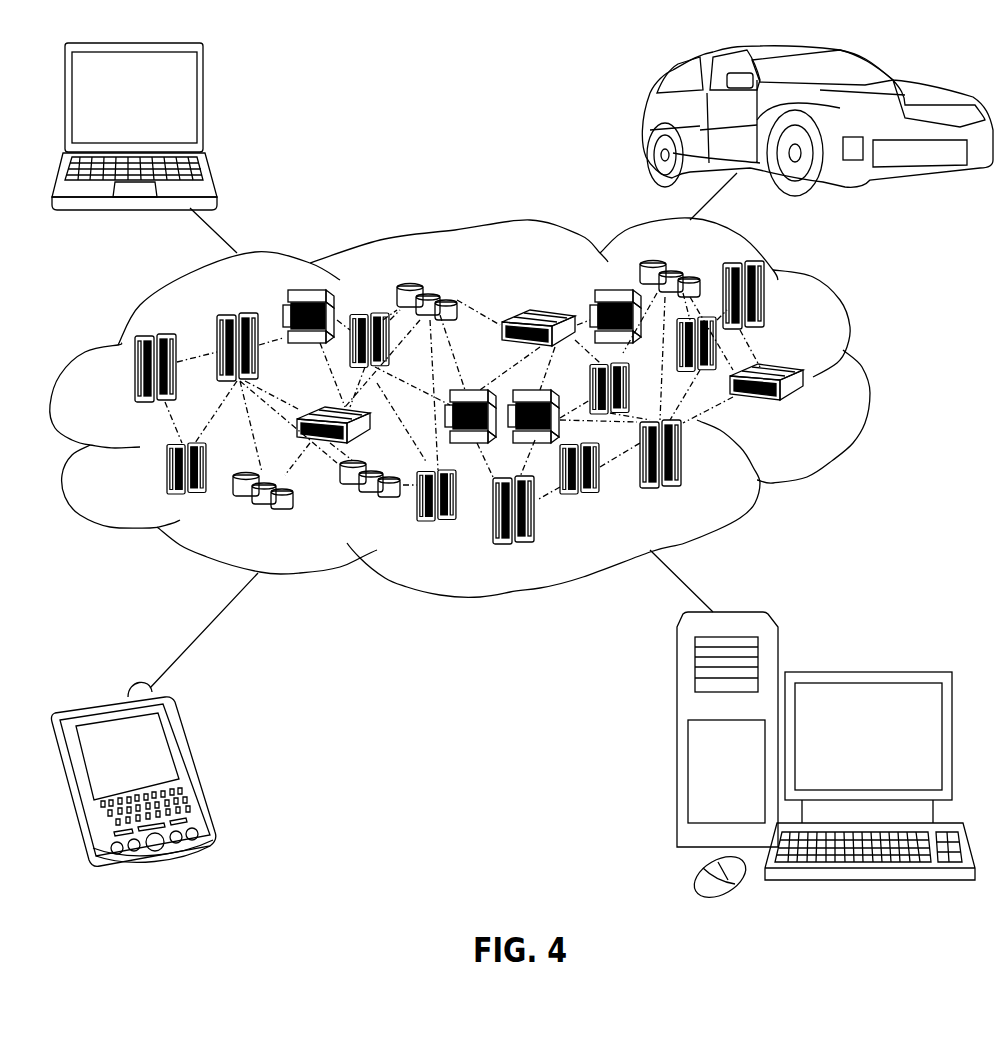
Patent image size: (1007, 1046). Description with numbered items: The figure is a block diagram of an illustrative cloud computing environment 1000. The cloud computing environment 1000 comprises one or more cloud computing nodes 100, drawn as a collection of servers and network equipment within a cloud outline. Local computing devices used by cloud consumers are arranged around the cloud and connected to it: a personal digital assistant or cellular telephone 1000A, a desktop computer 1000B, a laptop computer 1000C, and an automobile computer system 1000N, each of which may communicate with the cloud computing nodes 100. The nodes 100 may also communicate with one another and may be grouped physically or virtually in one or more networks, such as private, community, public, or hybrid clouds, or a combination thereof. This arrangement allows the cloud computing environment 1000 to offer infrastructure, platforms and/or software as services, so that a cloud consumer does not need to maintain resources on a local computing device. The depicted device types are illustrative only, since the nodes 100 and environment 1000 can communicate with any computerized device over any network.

The cloud computing environment 1000 is at (868, 380).
The cloud computing nodes 100 is at (808, 412).
The personal digital assistant (PDA) or cellular telephone 1000A is at (195, 770).
The desktop computer 1000B is at (868, 668).
The laptop computer 1000C is at (205, 108).
The automobile computer system 1000N is at (643, 120).